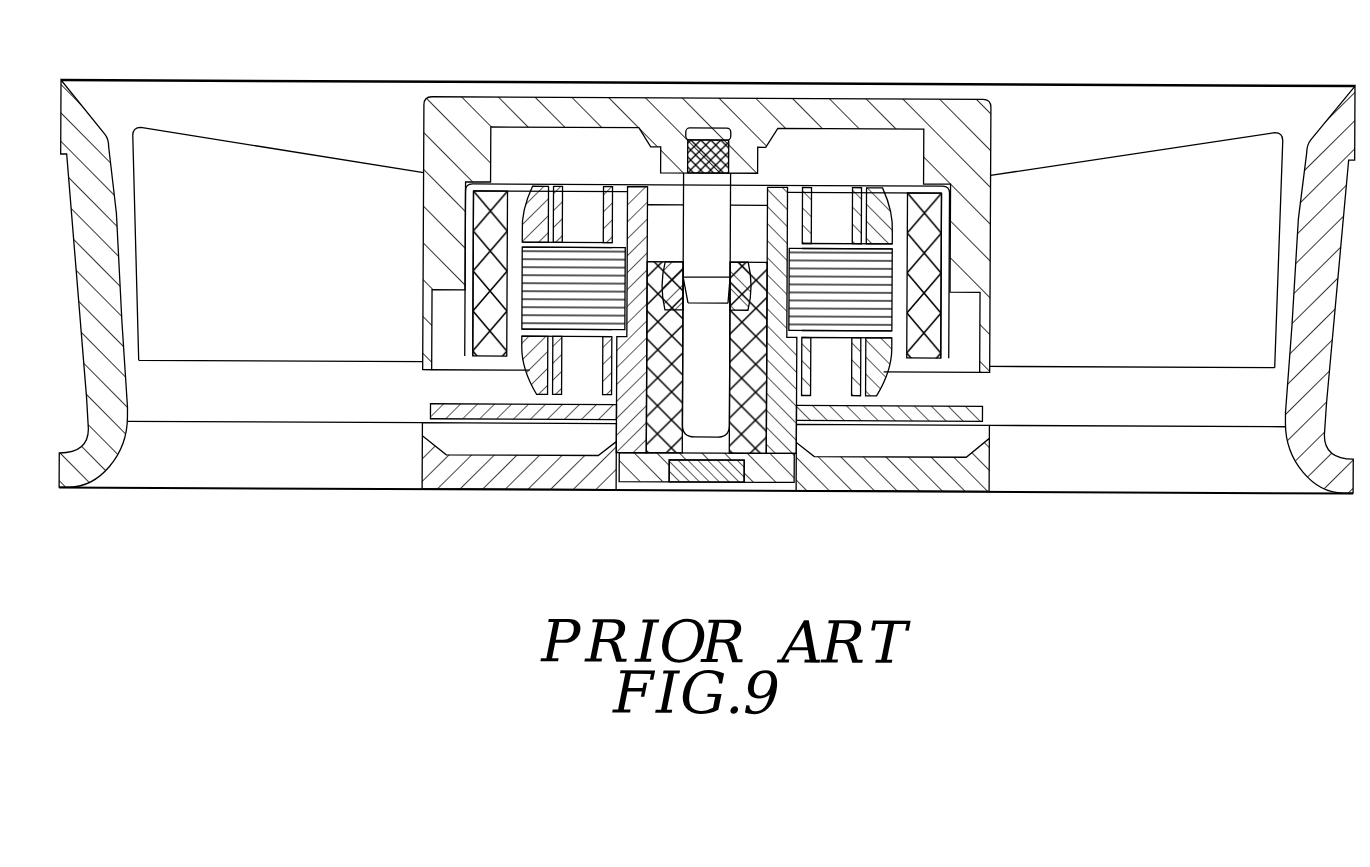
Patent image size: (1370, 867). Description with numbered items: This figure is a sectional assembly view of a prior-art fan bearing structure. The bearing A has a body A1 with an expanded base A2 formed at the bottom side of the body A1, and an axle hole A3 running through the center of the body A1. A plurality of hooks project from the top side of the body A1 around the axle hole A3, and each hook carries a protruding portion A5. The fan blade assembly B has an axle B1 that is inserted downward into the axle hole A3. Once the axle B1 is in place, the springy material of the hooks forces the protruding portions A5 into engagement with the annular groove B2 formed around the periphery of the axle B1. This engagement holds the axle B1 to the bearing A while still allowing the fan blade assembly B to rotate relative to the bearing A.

The bearing A is at (658, 490).
The body A1 is at (657, 402).
The expanded base A2 is at (770, 477).
The axle hole A3 is at (717, 440).
The protruding portion A5 is at (698, 283).
The fan blade assembly B is at (825, 108).
The axle B1 is at (745, 180).
The annular groove B2 is at (712, 293).